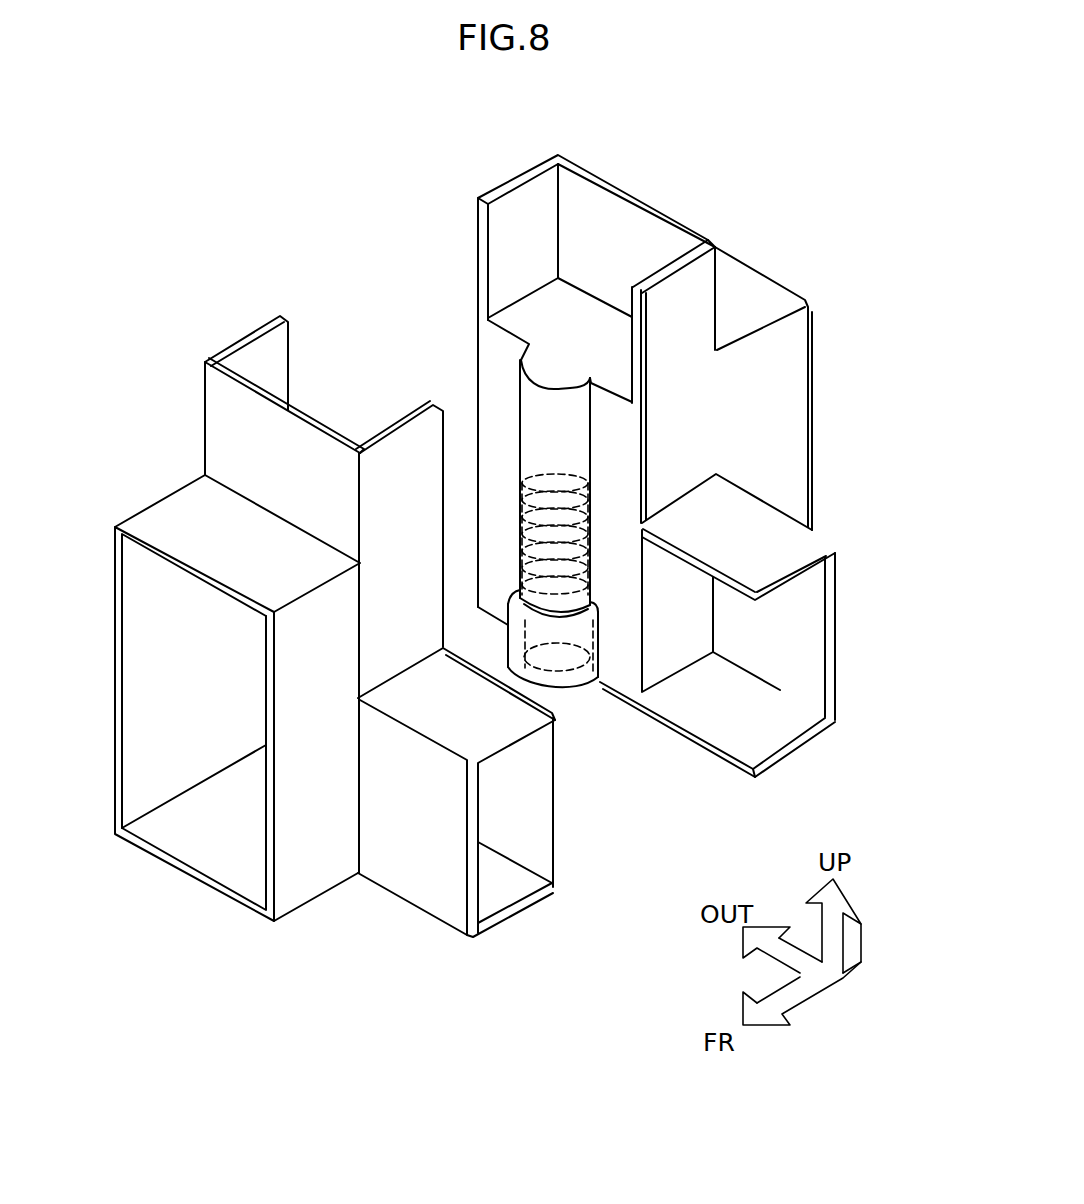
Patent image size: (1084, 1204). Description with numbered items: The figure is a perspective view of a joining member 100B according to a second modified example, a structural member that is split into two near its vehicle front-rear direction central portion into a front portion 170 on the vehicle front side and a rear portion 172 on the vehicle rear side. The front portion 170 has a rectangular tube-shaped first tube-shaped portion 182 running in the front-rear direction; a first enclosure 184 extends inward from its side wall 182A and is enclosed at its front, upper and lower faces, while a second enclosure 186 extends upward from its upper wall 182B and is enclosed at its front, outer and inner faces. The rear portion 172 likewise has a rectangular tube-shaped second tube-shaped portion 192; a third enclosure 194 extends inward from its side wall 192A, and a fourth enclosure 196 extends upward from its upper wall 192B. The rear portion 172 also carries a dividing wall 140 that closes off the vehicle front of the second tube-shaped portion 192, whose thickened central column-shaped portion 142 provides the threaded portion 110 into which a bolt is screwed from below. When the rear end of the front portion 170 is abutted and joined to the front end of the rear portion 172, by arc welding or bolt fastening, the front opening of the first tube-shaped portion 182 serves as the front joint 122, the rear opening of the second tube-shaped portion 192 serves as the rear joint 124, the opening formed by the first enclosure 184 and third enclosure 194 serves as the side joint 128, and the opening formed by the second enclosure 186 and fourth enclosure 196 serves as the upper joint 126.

The joining member 100B is at (658, 162).
The threaded portion 110 is at (588, 578).
The front joint 122 is at (232, 846).
The rear joint 124 is at (770, 406).
The upper joint 126 is at (515, 247).
The side joint 128 is at (772, 721).
The dividing wall 140 is at (502, 363).
The column-shaped portion 142 is at (533, 428).
The front portion 170 is at (229, 336).
The rear portion 172 is at (705, 226).
The first tube-shaped portion 182 is at (185, 555).
The side wall 182A is at (305, 860).
The upper wall 182B is at (207, 526).
The first enclosure 184 is at (430, 888).
The second enclosure 186 is at (225, 441).
The second tube-shaped portion 192 is at (785, 358).
The side wall 192A is at (780, 448).
The upper wall 192B is at (769, 301).
The third enclosure 194 is at (773, 566).
The fourth enclosure 196 is at (695, 288).